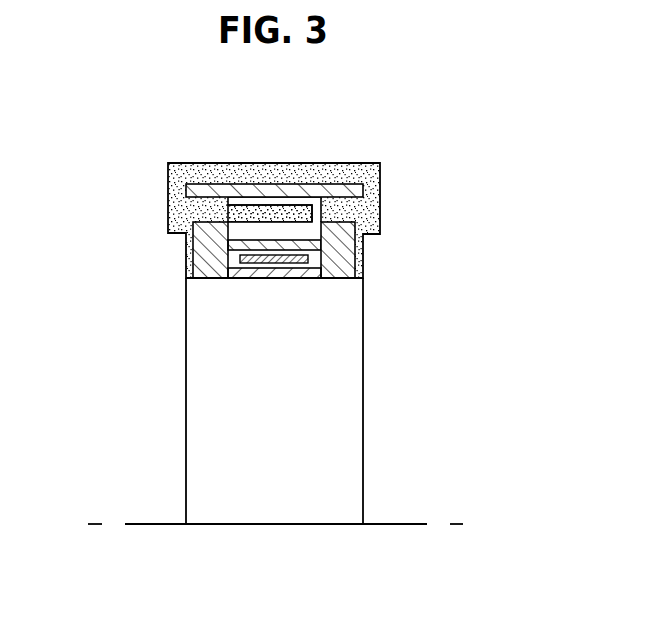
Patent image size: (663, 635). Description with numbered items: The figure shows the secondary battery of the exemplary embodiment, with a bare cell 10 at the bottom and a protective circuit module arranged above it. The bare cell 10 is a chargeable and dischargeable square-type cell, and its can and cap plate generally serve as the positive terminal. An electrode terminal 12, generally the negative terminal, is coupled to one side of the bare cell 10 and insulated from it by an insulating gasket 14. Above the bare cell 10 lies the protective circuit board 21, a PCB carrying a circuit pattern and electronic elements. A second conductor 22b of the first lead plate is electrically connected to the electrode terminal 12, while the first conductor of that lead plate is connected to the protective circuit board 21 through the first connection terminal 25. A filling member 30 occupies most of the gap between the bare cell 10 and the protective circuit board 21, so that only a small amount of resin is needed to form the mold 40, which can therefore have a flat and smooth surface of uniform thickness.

The bare cell 10 is at (352, 404).
The electrode terminal 12 is at (240, 262).
The insulating gasket 14 is at (238, 268).
The protective circuit board 21 is at (227, 187).
The second conductor 22b is at (243, 243).
The first connection terminal 25 is at (277, 203).
The filling member 30 is at (355, 252).
The mold 40 is at (335, 163).